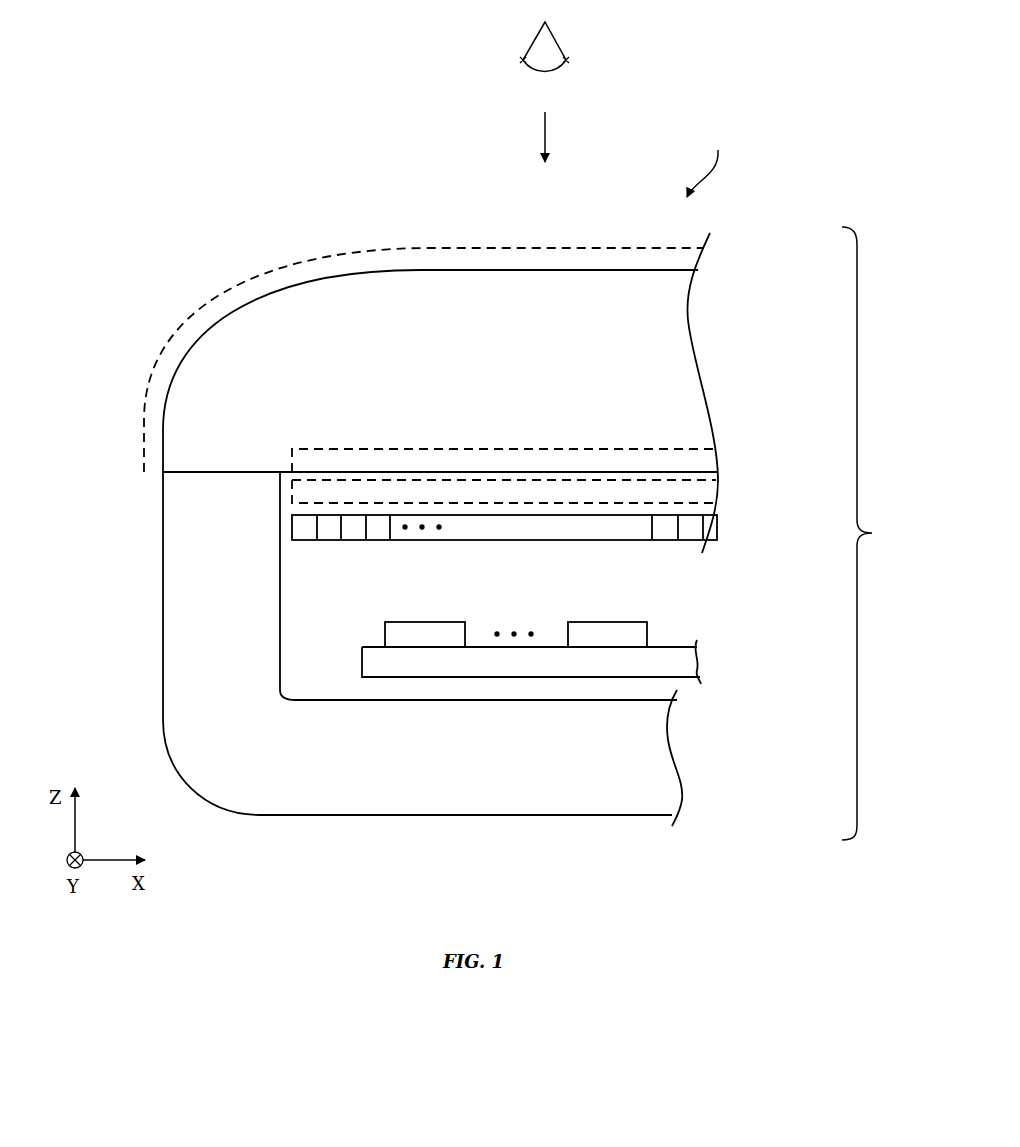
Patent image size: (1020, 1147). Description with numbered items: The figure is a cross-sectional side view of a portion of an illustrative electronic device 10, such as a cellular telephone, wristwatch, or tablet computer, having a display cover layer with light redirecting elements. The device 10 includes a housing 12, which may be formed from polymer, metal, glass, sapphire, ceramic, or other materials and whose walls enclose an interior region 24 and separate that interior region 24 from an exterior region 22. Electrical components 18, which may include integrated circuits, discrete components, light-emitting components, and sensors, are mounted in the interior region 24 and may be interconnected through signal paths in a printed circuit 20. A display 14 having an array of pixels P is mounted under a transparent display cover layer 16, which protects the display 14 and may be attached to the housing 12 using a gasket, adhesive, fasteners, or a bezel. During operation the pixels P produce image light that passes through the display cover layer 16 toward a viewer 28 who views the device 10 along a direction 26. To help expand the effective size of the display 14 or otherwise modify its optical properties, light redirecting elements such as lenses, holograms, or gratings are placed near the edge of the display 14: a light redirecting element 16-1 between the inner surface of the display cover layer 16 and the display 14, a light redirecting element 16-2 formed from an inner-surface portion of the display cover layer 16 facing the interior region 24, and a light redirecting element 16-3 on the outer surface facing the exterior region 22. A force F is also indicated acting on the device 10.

The electronic device 10 is at (871, 533).
The housing 12 is at (493, 800).
The display 14 is at (735, 526).
The display cover layer 16 is at (675, 365).
The light redirecting element 16-1 is at (697, 491).
The light redirecting element 16-2 is at (688, 449).
The light redirecting element 16-3 is at (688, 262).
The electrical components 18 is at (437, 622).
The printed circuit 20 is at (372, 655).
The exterior region 22 is at (272, 174).
The interior region 24 is at (328, 680).
The direction 26 is at (548, 130).
The viewer 28 is at (558, 40).
The pixels P is at (305, 532).
The force F is at (707, 161).